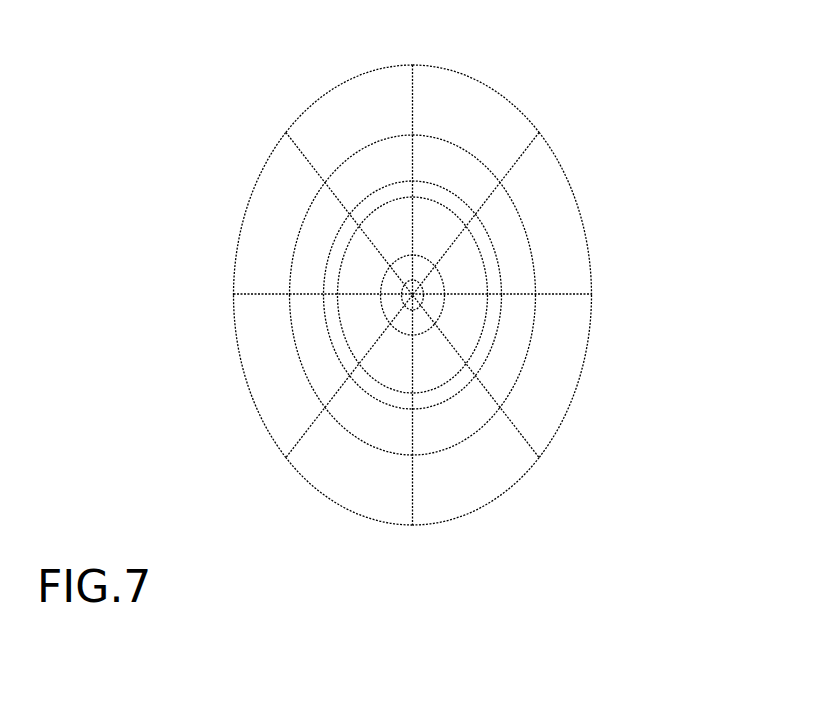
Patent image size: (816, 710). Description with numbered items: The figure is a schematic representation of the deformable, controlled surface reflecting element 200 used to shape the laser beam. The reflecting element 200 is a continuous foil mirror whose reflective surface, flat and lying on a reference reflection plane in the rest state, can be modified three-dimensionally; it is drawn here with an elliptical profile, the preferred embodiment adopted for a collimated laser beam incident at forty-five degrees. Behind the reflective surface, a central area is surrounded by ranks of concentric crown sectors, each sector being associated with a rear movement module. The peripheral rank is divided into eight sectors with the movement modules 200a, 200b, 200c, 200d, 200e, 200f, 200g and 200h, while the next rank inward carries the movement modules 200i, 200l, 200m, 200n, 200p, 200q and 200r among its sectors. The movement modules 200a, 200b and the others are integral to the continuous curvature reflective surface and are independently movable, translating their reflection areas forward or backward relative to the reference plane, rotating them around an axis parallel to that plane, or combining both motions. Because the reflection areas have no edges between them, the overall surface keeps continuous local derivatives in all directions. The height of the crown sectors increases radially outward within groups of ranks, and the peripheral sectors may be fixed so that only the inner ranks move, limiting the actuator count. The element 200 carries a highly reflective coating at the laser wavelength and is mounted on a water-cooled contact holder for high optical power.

The deformable controlled surface reflecting element 200 is at (175, 142).
The movement module 200a is at (472, 107).
The movement module 200b is at (563, 218).
The movement module 200c is at (573, 342).
The movement module 200d is at (518, 460).
The movement module 200e is at (307, 460).
The movement module 200f is at (248, 343).
The movement module 200g is at (250, 220).
The movement module 200h is at (353, 105).
The movement module 200i is at (425, 146).
The movement module 200l is at (505, 203).
The movement module 200m is at (530, 303).
The movement module 200n is at (440, 447).
The movement module 200p is at (298, 305).
The movement module 200q is at (312, 196).
The movement module 200r is at (399, 146).